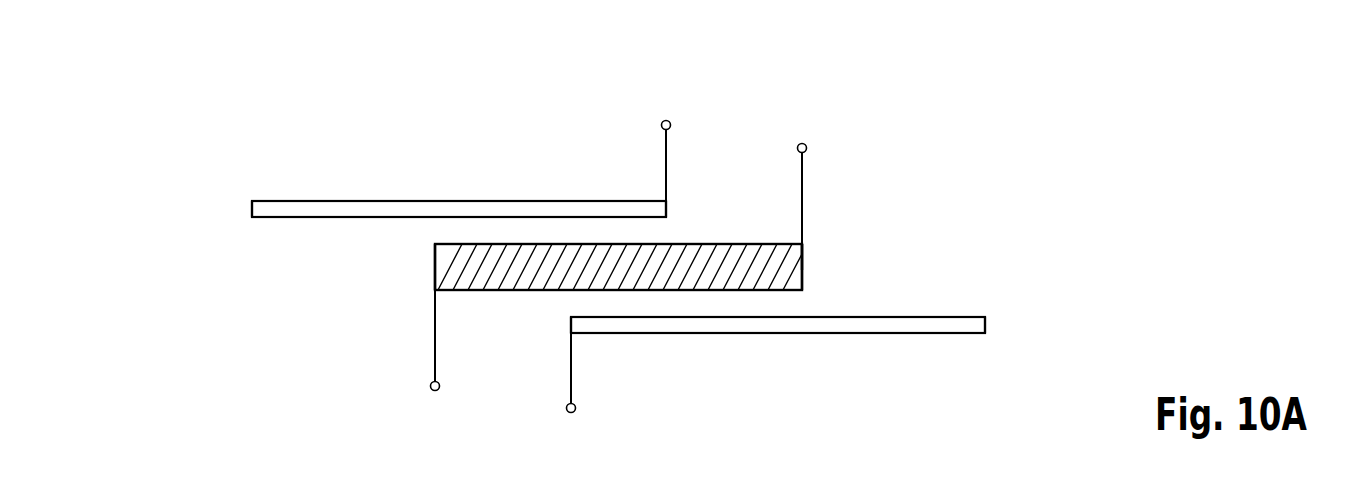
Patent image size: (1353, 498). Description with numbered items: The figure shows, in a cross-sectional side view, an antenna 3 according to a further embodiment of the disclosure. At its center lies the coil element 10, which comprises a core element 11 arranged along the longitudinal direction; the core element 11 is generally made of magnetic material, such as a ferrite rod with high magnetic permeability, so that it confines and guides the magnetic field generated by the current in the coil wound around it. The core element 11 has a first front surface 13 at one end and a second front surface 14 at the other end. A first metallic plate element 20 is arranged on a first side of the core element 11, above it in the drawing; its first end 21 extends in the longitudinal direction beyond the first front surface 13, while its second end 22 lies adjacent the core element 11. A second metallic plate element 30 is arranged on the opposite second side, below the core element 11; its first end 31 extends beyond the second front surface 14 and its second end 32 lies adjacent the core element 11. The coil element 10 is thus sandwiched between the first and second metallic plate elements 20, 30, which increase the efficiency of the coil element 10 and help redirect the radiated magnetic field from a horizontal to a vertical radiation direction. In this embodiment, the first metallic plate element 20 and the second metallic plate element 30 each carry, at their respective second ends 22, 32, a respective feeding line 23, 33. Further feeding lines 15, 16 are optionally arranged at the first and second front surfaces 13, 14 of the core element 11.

The antenna 3 is at (952, 85).
The coil element 10 is at (774, 214).
The core element 11 is at (793, 279).
The first front surface 13 is at (435, 265).
The second front surface 14 is at (803, 255).
The feeding line 15 is at (434, 338).
The feeding line 16 is at (803, 192).
The first metallic plate element 20 is at (312, 200).
The first end 21 is at (252, 208).
The second end 22 is at (668, 208).
The feeding line 23 is at (665, 163).
The second metallic plate element 30 is at (910, 334).
The first end 31 is at (987, 322).
The second end 32 is at (570, 320).
The feeding line 33 is at (572, 365).